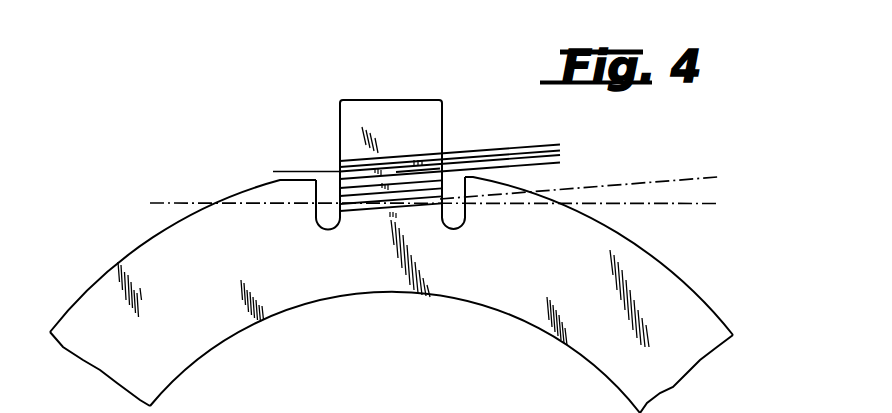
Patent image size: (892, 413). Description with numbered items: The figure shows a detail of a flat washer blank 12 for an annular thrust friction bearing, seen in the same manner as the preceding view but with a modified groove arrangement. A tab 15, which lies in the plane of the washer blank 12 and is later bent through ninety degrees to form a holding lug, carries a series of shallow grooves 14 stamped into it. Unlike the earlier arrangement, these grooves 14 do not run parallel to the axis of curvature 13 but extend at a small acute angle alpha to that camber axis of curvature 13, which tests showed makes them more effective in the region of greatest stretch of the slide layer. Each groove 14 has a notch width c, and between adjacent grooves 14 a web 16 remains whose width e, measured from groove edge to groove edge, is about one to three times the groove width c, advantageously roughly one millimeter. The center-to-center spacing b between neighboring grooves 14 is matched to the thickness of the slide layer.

The washer blank 12 is at (96, 325).
The axis of curvature 13 is at (169, 201).
The grooves 14 is at (340, 171).
The tab 15 is at (421, 97).
The web 16 is at (426, 165).
The groove spacing b is at (282, 228).
The groove width c is at (559, 183).
The web width e is at (562, 153).